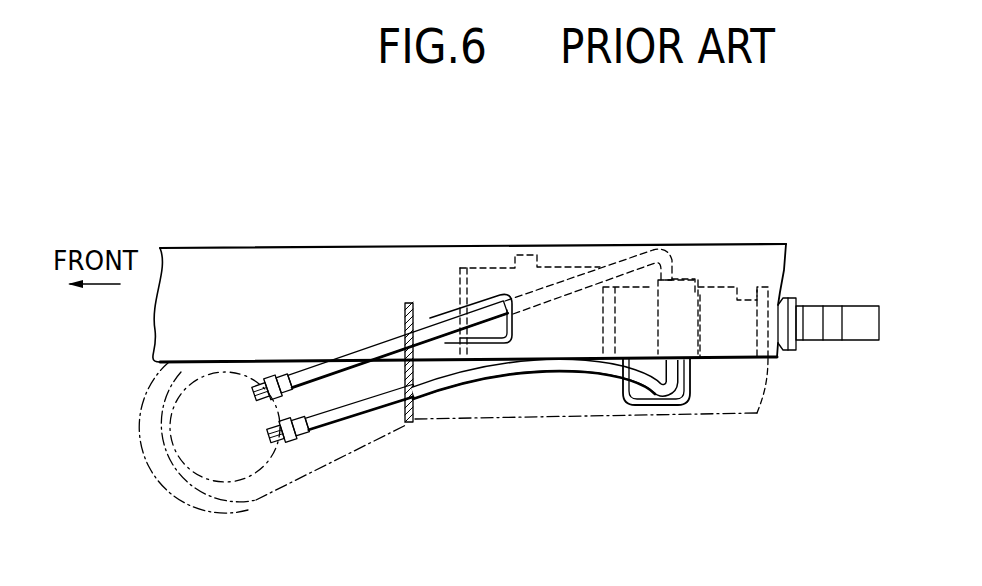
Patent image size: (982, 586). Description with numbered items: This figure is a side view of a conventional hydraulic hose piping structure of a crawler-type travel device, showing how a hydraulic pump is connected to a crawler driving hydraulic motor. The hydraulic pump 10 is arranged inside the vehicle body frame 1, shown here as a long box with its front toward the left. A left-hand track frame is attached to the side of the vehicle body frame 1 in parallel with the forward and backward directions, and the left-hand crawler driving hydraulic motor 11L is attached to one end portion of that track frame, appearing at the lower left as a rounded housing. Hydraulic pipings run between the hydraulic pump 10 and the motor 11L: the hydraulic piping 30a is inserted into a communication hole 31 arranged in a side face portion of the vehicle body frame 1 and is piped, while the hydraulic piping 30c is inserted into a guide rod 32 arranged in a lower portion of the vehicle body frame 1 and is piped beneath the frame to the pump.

The vehicle body frame 1 is at (229, 262).
The hydraulic pump 10 is at (689, 272).
The left-hand crawler driving hydraulic motor 11L is at (221, 482).
The hydraulic piping 30a is at (376, 345).
The hydraulic piping 30c is at (462, 377).
The communication hole 31 is at (491, 333).
The guide rod 32 is at (656, 407).